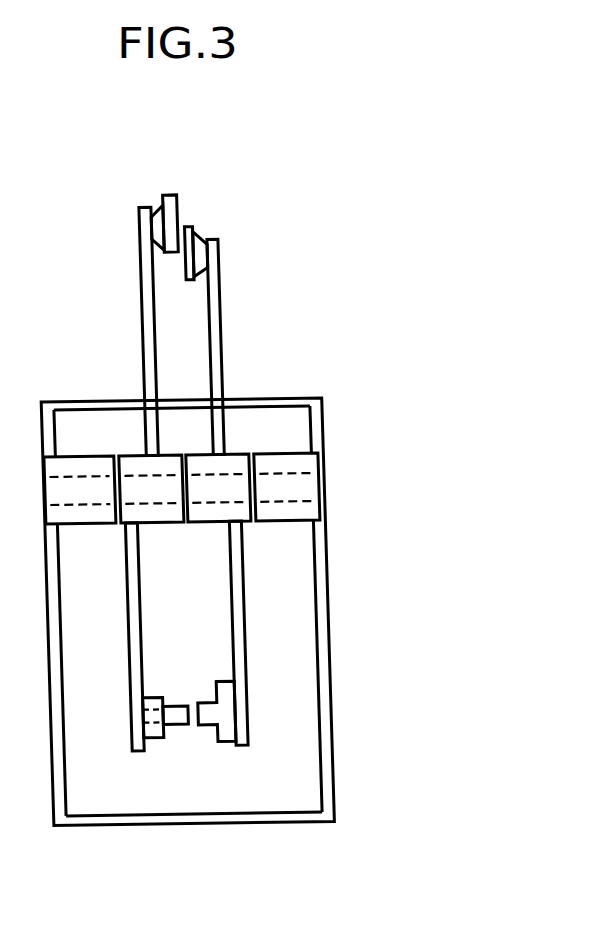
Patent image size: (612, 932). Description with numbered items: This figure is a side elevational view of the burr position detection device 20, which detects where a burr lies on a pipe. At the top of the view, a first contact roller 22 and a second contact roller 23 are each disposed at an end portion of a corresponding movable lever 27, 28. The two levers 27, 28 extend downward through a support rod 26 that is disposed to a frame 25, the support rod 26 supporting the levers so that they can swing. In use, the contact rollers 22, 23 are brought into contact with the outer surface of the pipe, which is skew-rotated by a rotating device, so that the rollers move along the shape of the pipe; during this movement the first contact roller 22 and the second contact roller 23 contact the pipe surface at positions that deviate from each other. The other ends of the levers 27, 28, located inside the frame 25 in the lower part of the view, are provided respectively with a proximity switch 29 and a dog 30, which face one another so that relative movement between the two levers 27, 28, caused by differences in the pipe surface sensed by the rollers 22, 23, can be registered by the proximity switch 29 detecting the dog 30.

The burr position detection device 20 is at (402, 222).
The first contact roller 22 is at (172, 196).
The second contact roller 23 is at (192, 228).
The frame 25 is at (328, 712).
The support rod 26 is at (298, 470).
The movable lever 27 is at (142, 350).
The movable lever 28 is at (222, 338).
The proximity switch 29 is at (173, 727).
The dog 30 is at (225, 745).